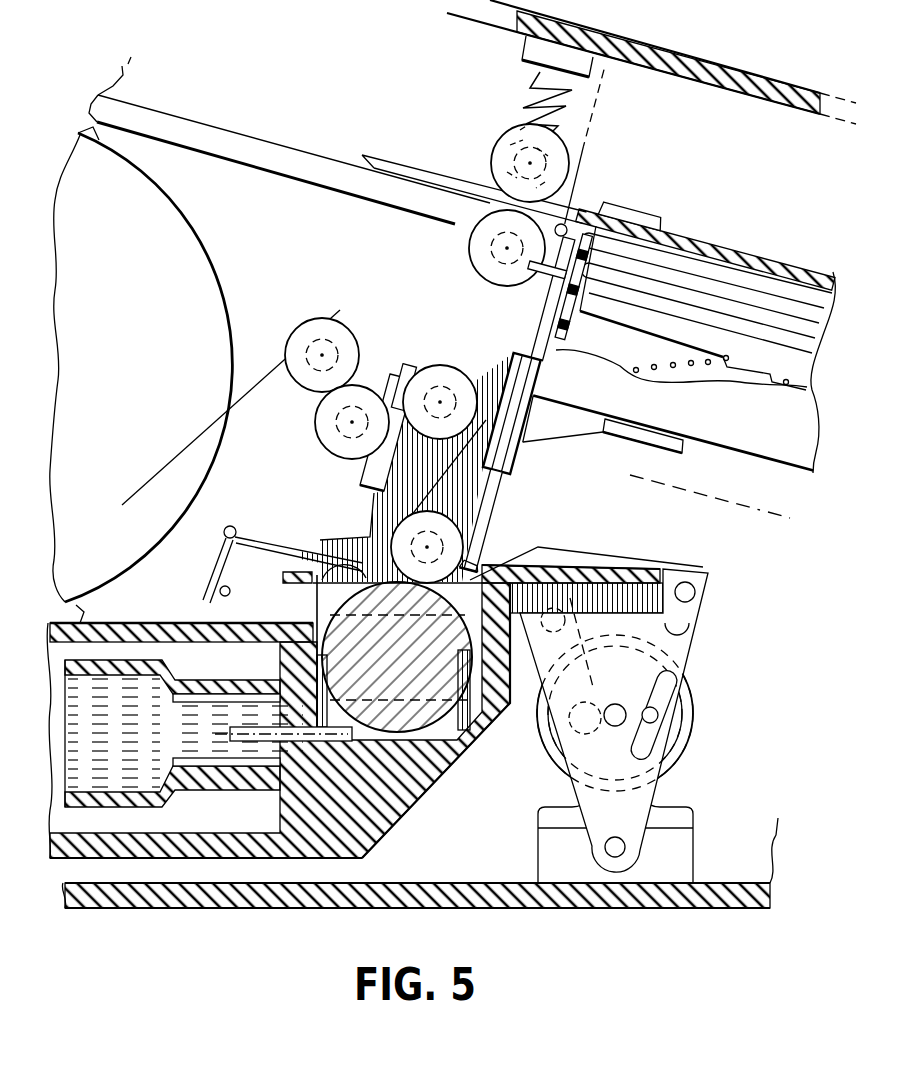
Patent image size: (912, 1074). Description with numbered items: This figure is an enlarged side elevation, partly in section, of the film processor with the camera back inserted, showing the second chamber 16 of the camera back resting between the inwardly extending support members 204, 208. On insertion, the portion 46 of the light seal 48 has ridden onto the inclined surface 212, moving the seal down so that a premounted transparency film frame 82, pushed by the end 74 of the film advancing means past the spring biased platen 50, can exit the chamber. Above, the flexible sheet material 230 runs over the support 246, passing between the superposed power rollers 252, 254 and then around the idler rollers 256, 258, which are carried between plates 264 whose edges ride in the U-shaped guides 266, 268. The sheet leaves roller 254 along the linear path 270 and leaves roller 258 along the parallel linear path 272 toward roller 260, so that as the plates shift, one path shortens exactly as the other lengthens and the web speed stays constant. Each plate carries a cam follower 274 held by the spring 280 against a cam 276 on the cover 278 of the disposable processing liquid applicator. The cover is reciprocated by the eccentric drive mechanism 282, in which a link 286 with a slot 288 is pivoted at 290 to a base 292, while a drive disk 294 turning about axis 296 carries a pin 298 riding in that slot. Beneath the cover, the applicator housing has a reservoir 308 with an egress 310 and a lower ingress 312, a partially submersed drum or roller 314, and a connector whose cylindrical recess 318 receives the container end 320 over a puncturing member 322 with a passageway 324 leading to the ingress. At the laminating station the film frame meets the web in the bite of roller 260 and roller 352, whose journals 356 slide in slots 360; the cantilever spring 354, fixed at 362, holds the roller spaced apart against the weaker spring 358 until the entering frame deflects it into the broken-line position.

The second chamber 16 is at (624, 362).
The portion of light seal 46 is at (549, 276).
The light seal 48 is at (577, 312).
The spring biased platen 50 is at (620, 357).
The end of film advancing means 74 is at (729, 247).
The premounted transparency film frame 82 is at (430, 190).
The member 204 is at (686, 455).
The member 208 is at (650, 197).
The inclined surface 212 is at (546, 302).
The flexible sheet material 230 is at (225, 420).
The support 246 is at (270, 167).
The power roller 252 is at (330, 318).
The power roller 254 is at (315, 420).
The idler roller 256 is at (450, 366).
The idler roller 258 is at (392, 545).
The roller 260 is at (469, 258).
The plate 264 is at (375, 505).
The guide 266 is at (368, 474).
The guide 268 is at (515, 458).
The linear path 270 is at (400, 377).
The linear path 272 is at (480, 495).
The cam follower 274 is at (283, 574).
The cam 276 is at (495, 553).
The cover 278 is at (608, 563).
The spring 280 is at (246, 530).
The eccentric drive mechanism 282 is at (694, 768).
The link 286 is at (700, 641).
The slot 288 is at (668, 687).
The pivot 290 is at (626, 850).
The base 292 is at (698, 592).
The drive disk 294 is at (560, 736).
The axis 296 is at (590, 779).
The pin 298 is at (662, 716).
The reservoir 308 is at (440, 760).
The egress 310 is at (312, 646).
The ingress 312 is at (418, 790).
The drum or roller 314 is at (480, 720).
The cylindrically shaped recess 318 is at (280, 780).
The end of container 320 is at (216, 791).
The puncturing member 322 is at (198, 781).
The passageway 324 is at (330, 790).
The roller 352 is at (496, 148).
The cantilever spring 354 is at (441, 176).
The journal 356 is at (506, 139).
The spring 358 is at (523, 47).
The slot 360 is at (572, 95).
The attachment point 362 is at (566, 222).